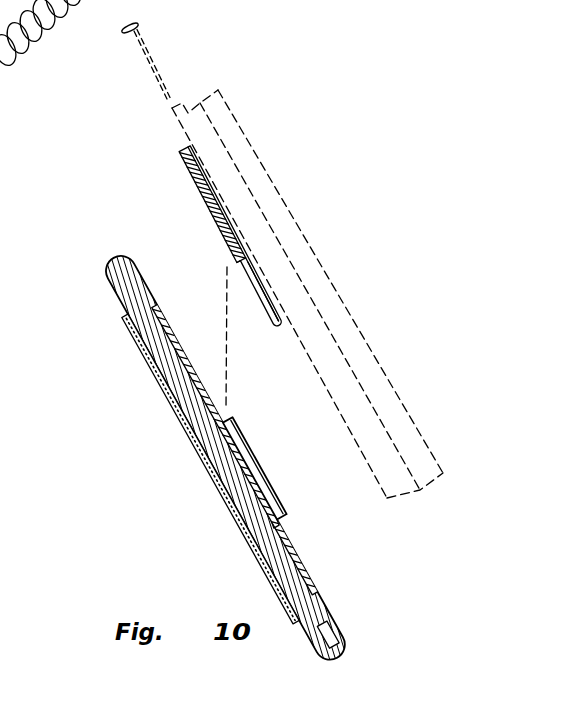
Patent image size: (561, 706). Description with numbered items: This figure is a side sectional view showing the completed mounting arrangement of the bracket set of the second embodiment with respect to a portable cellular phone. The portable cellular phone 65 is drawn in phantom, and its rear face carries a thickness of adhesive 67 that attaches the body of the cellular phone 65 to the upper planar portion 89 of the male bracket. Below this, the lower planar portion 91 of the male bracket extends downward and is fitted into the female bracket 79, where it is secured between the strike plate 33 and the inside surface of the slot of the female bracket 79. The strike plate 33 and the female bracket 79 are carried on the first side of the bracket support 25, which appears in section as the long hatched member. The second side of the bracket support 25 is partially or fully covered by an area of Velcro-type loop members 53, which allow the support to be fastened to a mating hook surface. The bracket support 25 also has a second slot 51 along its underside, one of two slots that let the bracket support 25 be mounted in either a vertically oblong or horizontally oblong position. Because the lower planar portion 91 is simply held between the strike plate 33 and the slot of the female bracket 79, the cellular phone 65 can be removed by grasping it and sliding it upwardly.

The bracket support 25 is at (116, 262).
The strike plate 33 is at (308, 576).
The second slot 51 is at (338, 634).
The loop members 53 is at (170, 400).
The portable cellular phone 65 is at (258, 128).
The adhesive 67 is at (187, 147).
The female bracket 79 is at (262, 464).
The upper planar portion 89 is at (202, 195).
The lower planar portion 91 is at (265, 302).